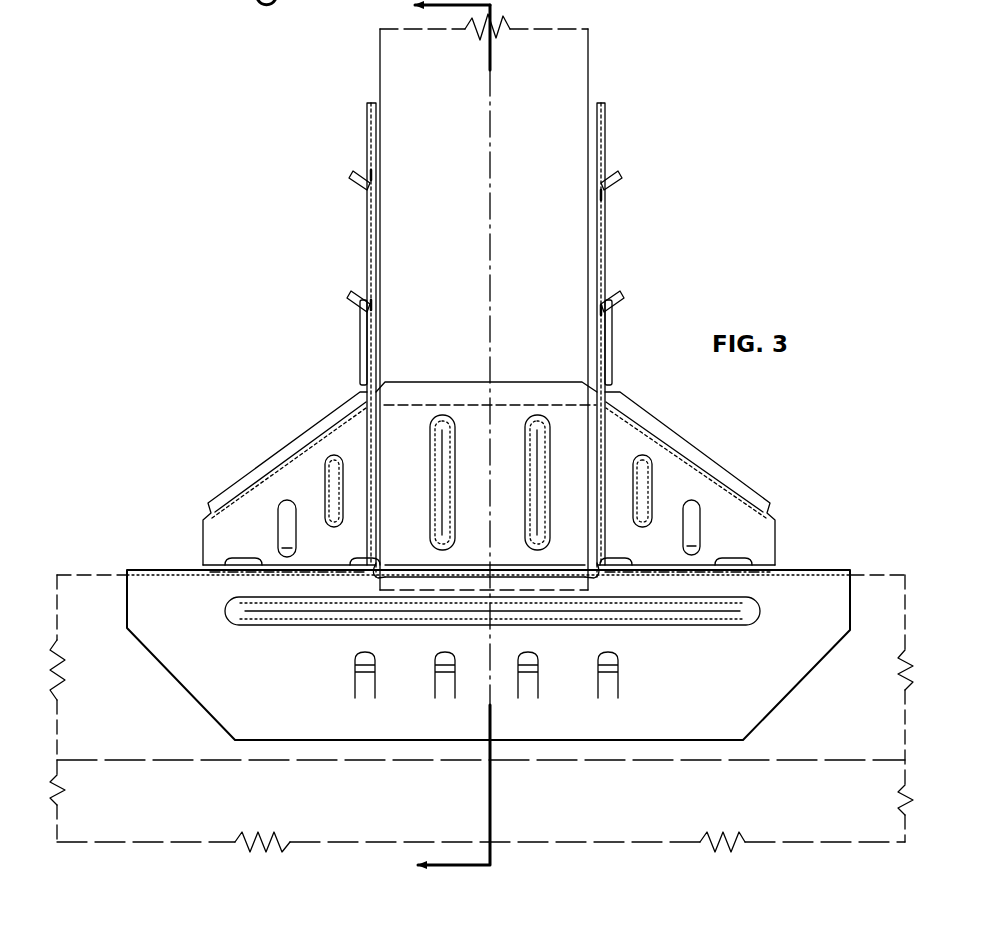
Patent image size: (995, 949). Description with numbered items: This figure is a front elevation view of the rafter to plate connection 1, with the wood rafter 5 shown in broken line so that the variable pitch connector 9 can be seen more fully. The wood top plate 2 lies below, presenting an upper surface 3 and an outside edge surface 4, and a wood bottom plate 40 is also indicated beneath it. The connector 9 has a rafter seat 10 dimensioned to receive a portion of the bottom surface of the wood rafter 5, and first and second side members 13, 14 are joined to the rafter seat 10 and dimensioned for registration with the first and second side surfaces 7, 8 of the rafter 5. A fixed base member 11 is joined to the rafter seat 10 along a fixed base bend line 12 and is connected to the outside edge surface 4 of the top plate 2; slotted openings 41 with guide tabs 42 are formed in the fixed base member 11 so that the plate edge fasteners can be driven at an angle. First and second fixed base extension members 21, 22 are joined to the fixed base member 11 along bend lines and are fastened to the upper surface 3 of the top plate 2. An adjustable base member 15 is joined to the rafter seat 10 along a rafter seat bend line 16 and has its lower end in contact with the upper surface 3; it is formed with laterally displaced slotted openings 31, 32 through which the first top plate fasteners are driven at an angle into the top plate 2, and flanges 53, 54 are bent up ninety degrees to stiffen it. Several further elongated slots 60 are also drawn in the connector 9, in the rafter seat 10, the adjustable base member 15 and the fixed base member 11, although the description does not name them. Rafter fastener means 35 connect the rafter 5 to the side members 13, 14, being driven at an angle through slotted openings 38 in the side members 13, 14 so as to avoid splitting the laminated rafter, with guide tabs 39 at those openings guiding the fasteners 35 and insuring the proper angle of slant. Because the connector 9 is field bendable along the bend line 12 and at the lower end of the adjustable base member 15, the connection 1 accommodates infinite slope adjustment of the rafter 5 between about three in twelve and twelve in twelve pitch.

The rafter to plate connection 1 is at (175, 0).
The wood top plate 2 is at (493, 666).
The upper surface 3 is at (862, 572).
The outside edge surface 4 is at (858, 712).
The wood rafter 5 is at (320, 70).
The first side surface 7 is at (485, 325).
The second side surface 8 is at (588, 62).
The variable pitch connector 9 is at (480, 660).
The rafter seat 10 is at (517, 490).
The fixed base member 11 is at (765, 725).
The fixed base bend line 12 is at (455, 565).
The first side member 13 is at (366, 222).
The second side member 14 is at (605, 228).
The adjustable base member 15 is at (312, 491).
The rafter seat bend line 16 is at (505, 380).
The first fixed base extension member 21 is at (160, 568).
The second fixed base extension member 22 is at (800, 568).
The slotted opening 31 is at (278, 525).
The slotted opening 32 is at (700, 530).
The rafter fastener means 35 is at (366, 176).
The slotted openings 38 is at (372, 175).
The guide tabs 39 is at (349, 176).
The wood bottom plate 40 is at (906, 765).
The slotted openings 41 is at (486, 676).
The guide tabs 42 is at (440, 698).
The flange 53 is at (246, 474).
The flange 54 is at (720, 476).
The slot 60 is at (440, 467).